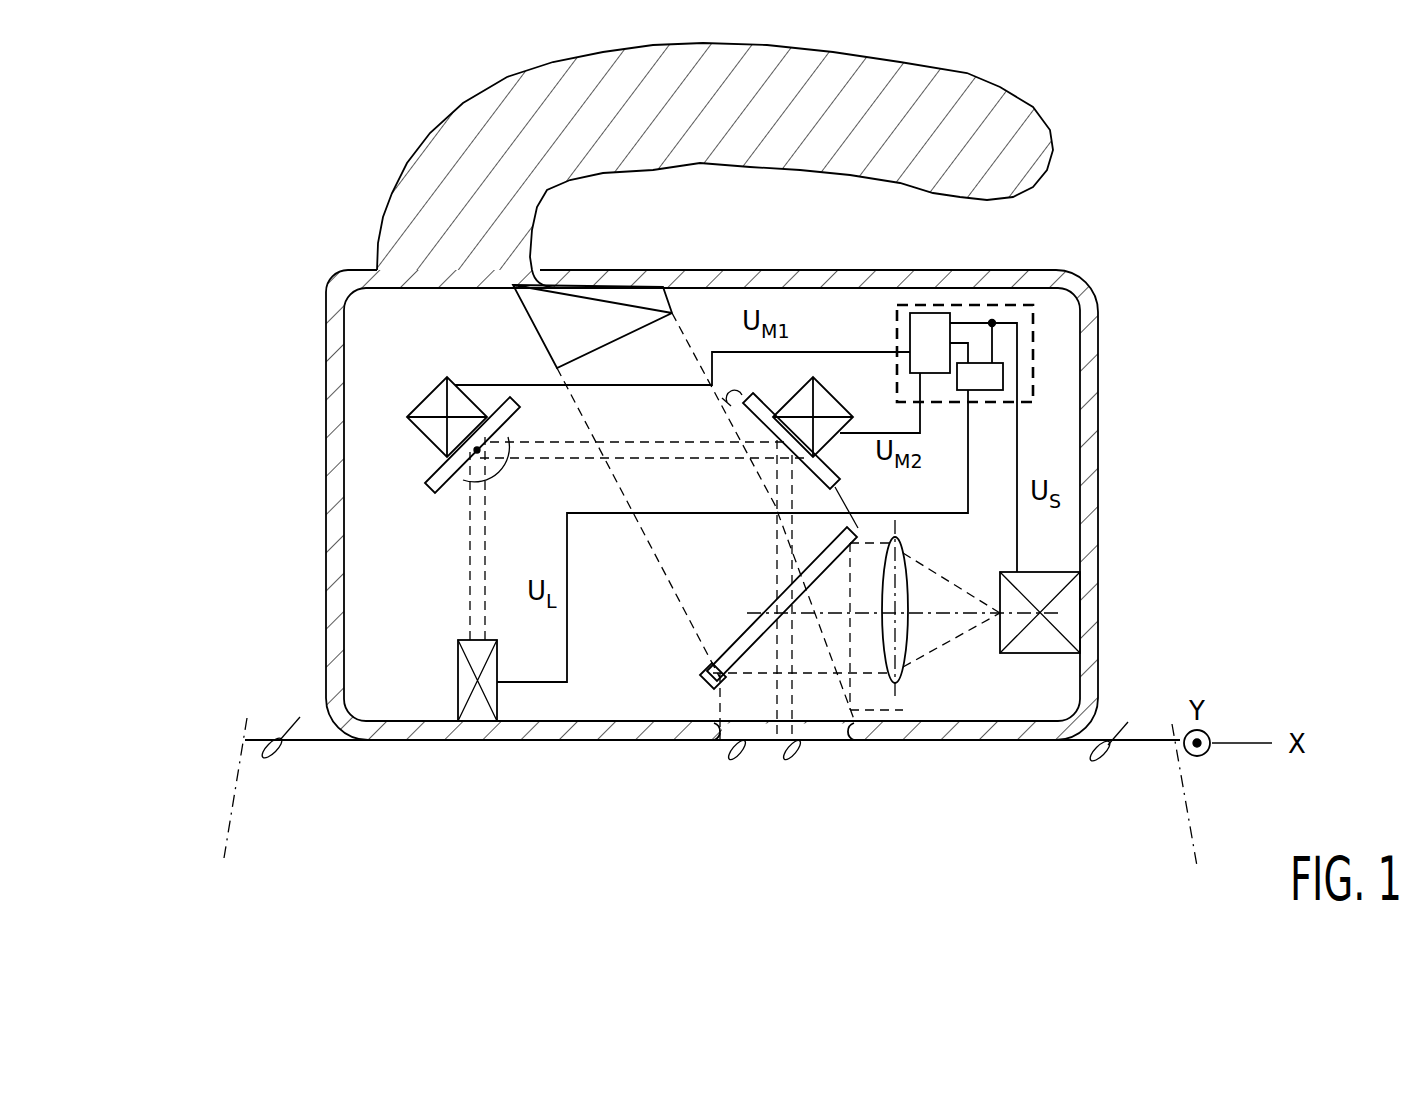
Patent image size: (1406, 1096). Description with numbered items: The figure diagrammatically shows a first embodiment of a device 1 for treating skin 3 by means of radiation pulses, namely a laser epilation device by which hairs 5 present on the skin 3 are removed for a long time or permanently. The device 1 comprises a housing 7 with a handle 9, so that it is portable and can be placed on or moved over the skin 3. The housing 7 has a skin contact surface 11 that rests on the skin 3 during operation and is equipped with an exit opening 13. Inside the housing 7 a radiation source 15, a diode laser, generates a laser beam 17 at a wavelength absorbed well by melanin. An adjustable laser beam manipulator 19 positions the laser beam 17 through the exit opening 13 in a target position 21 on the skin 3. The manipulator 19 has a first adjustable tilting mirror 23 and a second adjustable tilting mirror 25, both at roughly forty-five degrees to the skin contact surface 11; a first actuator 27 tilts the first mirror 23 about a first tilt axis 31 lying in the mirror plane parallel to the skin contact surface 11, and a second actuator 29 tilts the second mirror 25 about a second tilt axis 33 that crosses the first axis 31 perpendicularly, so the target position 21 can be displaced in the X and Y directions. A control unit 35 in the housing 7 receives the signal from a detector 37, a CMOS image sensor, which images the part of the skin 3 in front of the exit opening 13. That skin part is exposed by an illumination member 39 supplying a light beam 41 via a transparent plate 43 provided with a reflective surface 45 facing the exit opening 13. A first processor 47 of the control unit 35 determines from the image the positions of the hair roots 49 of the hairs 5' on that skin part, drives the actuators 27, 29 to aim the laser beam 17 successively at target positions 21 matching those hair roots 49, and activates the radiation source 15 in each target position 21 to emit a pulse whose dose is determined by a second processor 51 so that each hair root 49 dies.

The device 1 is at (183, 663).
The skin 3 is at (1148, 740).
The hairs 5 is at (693, 719).
The hairs 5' is at (768, 809).
The housing 7 is at (1098, 450).
The handle 9 is at (990, 95).
The skin contact surface 11 is at (598, 734).
The exit opening 13 is at (830, 733).
The radiation source 15 is at (465, 675).
The laser beam 17 is at (775, 488).
The laser beam manipulator 19 is at (384, 403).
The target position 21 is at (783, 735).
The first adjustable tilting mirror 23 is at (440, 490).
The second adjustable tilting mirror 25 is at (836, 484).
The first actuator 27 is at (430, 405).
The second actuator 29 is at (824, 402).
The first tilt axis 31 is at (496, 478).
The second tilt axis 33 is at (735, 392).
The control unit 35 is at (897, 329).
The detector 37 is at (1075, 597).
The illumination member 39 is at (545, 318).
The light beam 41 is at (660, 556).
The transparent plate 43 is at (704, 680).
The reflective surface 45 is at (746, 643).
The first processor 47 is at (931, 313).
The hair roots 49 is at (763, 717).
The second processor 51 is at (990, 392).